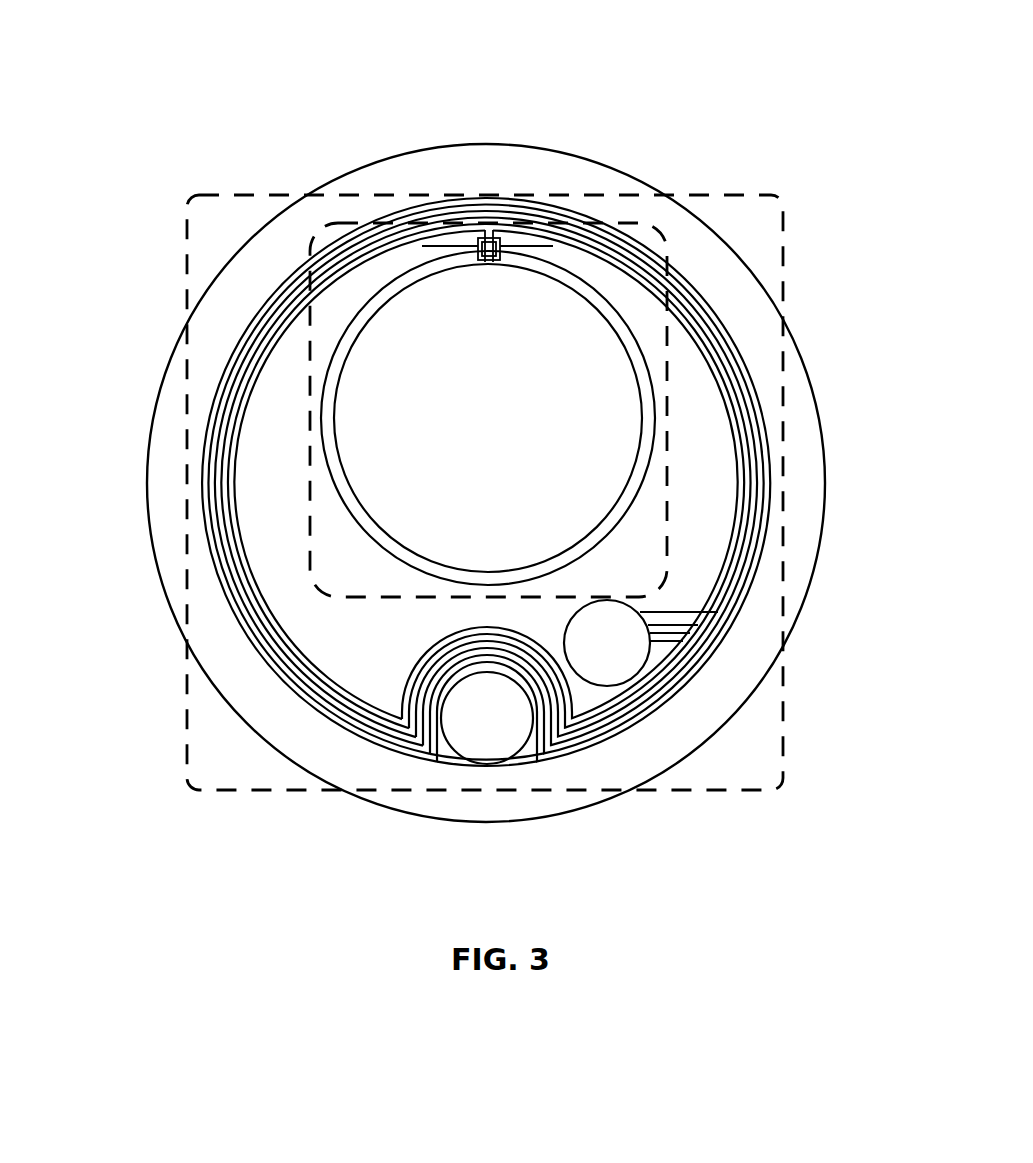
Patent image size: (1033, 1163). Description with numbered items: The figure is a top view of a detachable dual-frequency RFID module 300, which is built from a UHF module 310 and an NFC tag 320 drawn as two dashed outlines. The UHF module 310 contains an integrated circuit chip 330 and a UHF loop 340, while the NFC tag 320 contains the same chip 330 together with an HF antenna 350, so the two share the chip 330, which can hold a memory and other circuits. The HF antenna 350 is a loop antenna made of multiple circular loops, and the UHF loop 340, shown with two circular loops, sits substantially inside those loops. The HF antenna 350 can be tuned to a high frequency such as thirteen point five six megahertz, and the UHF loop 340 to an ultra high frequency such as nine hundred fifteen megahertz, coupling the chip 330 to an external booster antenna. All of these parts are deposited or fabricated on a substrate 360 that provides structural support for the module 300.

The dual-frequency RFID module 300 is at (153, 68).
The UHF module 310 is at (650, 232).
The NFC tag 320 is at (192, 196).
The integrated circuit chip 330 is at (497, 237).
The UHF loop 340 is at (318, 406).
The HF antenna 350 is at (736, 405).
The substrate 360 is at (733, 295).